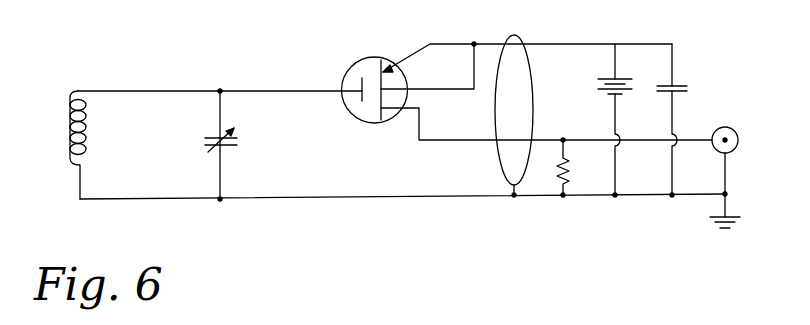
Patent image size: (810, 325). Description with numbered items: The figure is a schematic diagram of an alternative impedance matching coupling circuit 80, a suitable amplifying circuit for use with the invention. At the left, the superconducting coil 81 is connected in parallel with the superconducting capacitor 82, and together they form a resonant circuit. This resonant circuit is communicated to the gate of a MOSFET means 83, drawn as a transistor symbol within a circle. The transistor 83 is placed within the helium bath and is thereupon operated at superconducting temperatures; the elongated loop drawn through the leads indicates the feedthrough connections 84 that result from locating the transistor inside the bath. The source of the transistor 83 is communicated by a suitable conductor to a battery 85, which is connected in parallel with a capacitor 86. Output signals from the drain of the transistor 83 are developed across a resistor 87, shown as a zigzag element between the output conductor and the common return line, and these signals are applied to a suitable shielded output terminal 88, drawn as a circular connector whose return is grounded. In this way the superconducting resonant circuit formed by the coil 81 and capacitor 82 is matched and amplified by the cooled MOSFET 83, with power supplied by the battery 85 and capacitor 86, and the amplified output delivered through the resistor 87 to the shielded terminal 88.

The impedance matching coupling circuit 80 is at (290, 70).
The superconducting coil 81 is at (68, 126).
The superconducting capacitor 82 is at (212, 138).
The MOSFET means 83 is at (381, 58).
The feedthrough connections 84 is at (527, 58).
The battery 85 is at (612, 79).
The capacitor 86 is at (684, 86).
The resistor 87 is at (556, 170).
The shielded output terminal 88 is at (735, 128).